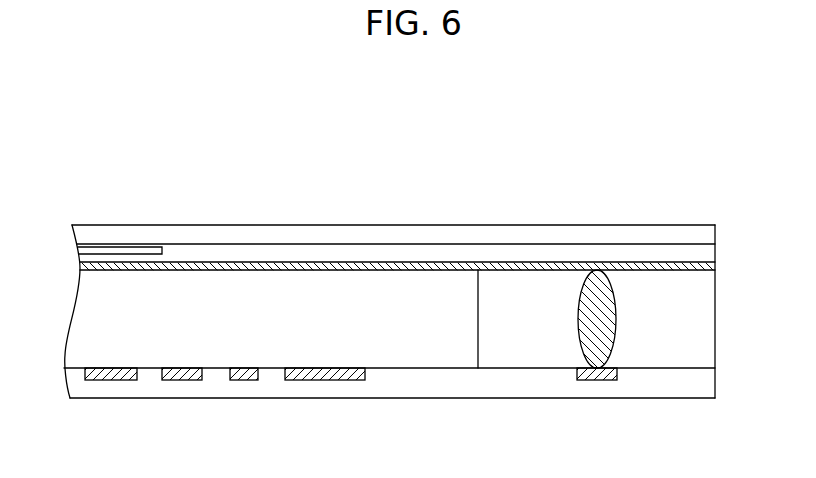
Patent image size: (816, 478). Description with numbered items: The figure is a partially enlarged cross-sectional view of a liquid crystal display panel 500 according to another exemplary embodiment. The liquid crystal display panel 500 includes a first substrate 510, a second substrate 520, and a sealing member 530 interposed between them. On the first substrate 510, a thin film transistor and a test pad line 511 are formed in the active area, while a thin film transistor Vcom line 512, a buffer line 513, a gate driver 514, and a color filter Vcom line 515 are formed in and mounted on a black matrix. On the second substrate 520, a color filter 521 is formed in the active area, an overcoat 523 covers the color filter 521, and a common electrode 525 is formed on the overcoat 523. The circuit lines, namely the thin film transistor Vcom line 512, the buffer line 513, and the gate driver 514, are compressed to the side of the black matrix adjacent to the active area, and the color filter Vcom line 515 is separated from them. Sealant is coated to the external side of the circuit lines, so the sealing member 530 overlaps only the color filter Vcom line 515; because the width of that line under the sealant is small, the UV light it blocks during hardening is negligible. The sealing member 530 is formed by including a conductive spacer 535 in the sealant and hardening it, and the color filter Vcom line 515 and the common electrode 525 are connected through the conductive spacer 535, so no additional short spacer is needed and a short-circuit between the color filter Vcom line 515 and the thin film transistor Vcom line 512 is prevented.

The liquid crystal display panel 500 is at (392, 117).
The first substrate 510 is at (682, 383).
The test pad line 511 is at (110, 380).
The thin film transistor Vcom line 512 is at (183, 380).
The buffer line 513 is at (243, 380).
The gate driver 514 is at (320, 380).
The color filter Vcom line 515 is at (593, 380).
The second substrate 520 is at (485, 235).
The color filter 521 is at (126, 248).
The overcoat 523 is at (244, 255).
The common electrode 525 is at (365, 263).
The sealing member 530 is at (702, 318).
The conductive spacer 535 is at (608, 335).